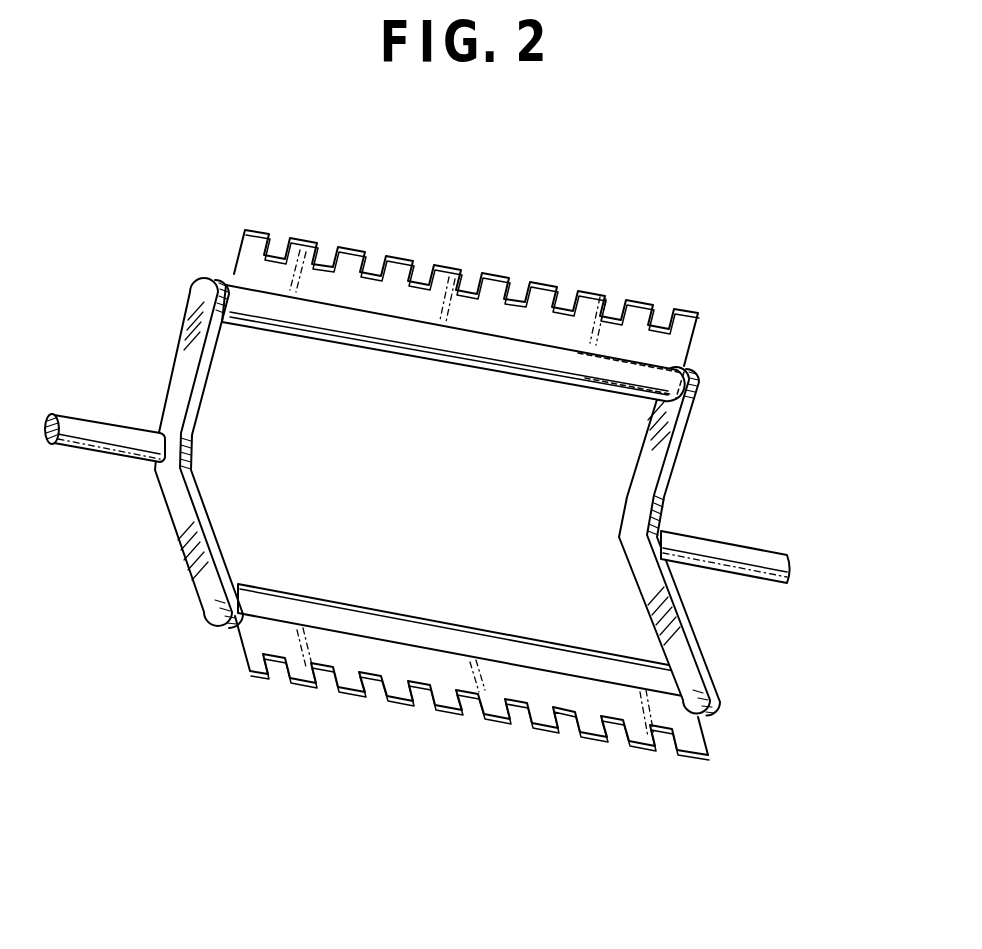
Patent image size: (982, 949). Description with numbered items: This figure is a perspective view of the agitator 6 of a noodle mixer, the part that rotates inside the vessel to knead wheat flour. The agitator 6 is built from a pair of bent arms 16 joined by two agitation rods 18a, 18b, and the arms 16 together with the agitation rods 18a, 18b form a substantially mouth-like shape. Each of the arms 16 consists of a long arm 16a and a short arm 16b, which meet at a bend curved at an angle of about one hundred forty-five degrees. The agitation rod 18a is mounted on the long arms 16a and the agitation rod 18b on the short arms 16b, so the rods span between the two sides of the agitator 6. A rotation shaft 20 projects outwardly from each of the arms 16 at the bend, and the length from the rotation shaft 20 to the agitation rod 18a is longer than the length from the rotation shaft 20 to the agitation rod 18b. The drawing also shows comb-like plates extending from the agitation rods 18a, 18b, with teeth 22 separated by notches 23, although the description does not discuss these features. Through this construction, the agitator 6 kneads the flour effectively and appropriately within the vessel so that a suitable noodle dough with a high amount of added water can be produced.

The agitator 6 is at (748, 329).
The arms 16 is at (664, 490).
The long arm 16a is at (693, 645).
The short arm 16b is at (684, 428).
The agitation rod 18a is at (676, 687).
The agitation rod 18b is at (698, 372).
The rotation shaft 20 is at (102, 436).
The tooth 22 is at (538, 302).
The notch 23 is at (662, 308).